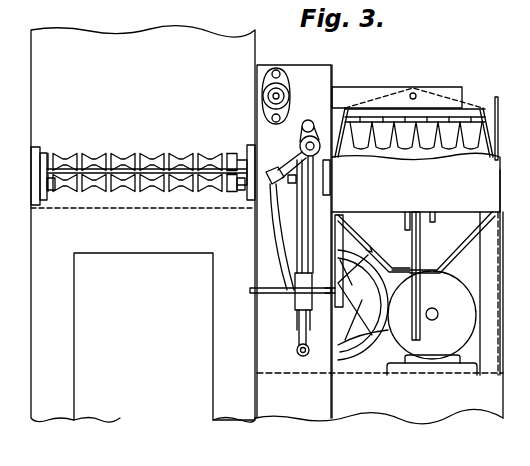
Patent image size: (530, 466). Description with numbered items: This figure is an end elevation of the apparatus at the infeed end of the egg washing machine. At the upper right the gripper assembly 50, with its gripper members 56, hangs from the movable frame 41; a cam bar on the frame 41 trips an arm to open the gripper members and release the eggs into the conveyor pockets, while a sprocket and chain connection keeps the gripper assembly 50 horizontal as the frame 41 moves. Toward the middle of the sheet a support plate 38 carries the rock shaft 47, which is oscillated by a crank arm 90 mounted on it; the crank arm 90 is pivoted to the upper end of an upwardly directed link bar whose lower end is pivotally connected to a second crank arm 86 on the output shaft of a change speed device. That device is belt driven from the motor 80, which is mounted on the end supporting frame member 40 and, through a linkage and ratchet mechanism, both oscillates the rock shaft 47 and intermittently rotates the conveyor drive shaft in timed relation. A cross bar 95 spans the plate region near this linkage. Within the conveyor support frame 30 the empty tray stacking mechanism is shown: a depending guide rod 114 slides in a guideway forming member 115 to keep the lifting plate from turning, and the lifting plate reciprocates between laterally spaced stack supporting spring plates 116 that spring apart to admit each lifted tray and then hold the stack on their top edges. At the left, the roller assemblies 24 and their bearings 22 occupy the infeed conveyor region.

The tool rack / cutter assembly 24 is at (97, 176).
The right bearing 22 is at (240, 190).
The mounting plate 38 is at (294, 72).
The rock shaft 47 is at (316, 128).
The crank arm 90 is at (278, 165).
The cross bar 95 is at (266, 297).
The crank arm 86 is at (297, 351).
The frame 41 is at (384, 90).
The gripper assembly 50 is at (415, 128).
The gripper member 56 is at (425, 150).
The stack supporting spring plate 116 is at (342, 150).
The conveyor support frame 30 is at (500, 227).
The guideway forming member 115 is at (443, 257).
The guide rod 114 is at (419, 301).
The motor 80 is at (470, 325).
The end supporting frame member 40 is at (445, 403).